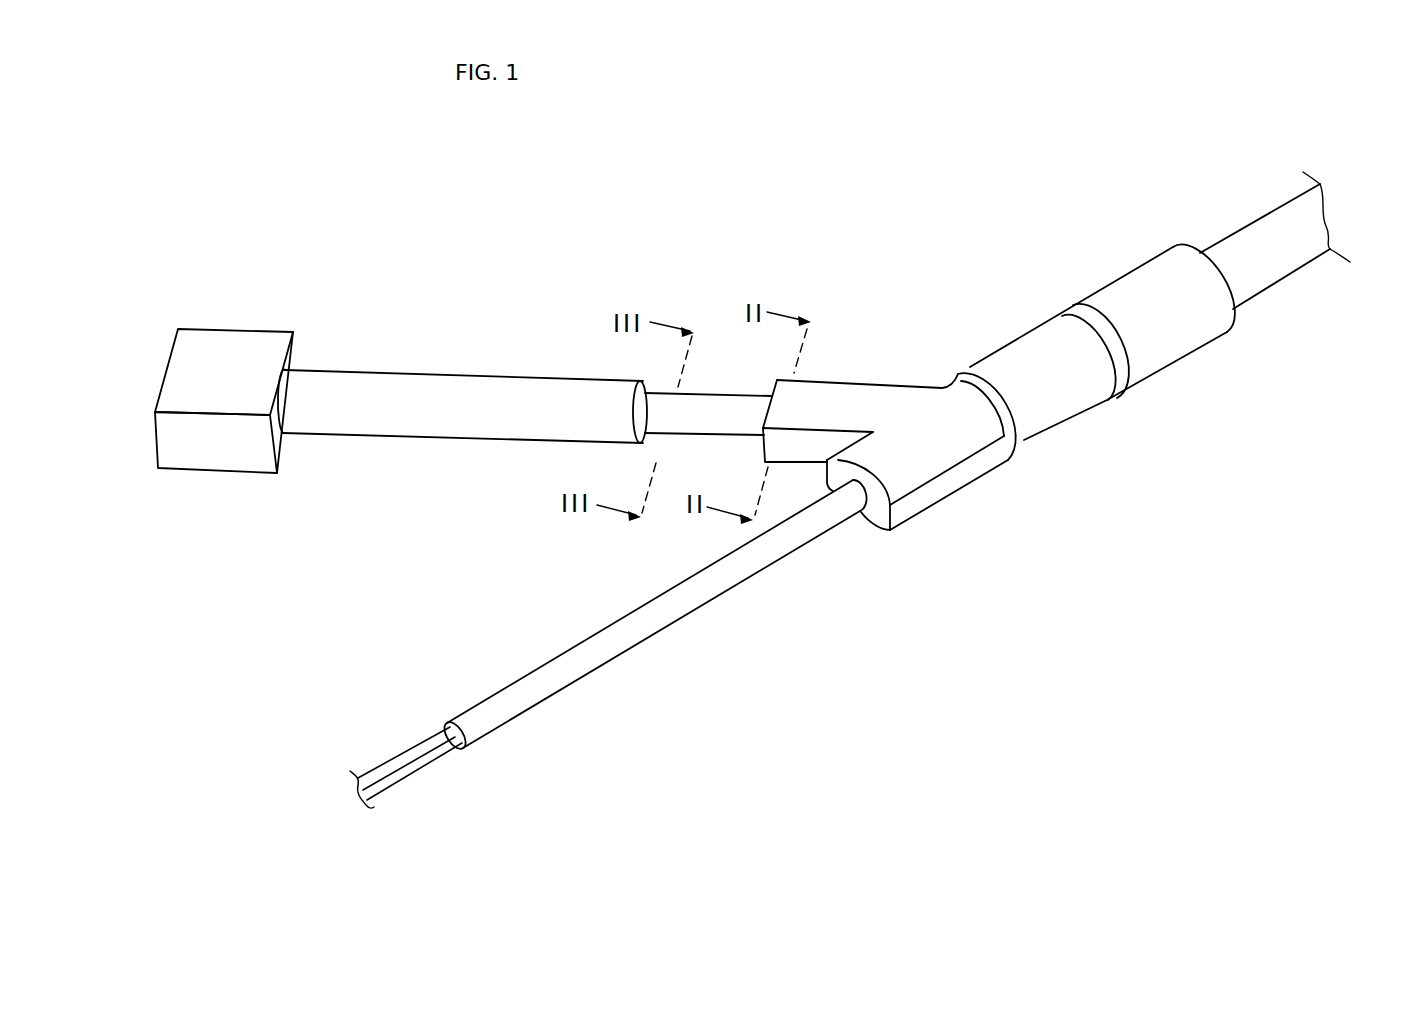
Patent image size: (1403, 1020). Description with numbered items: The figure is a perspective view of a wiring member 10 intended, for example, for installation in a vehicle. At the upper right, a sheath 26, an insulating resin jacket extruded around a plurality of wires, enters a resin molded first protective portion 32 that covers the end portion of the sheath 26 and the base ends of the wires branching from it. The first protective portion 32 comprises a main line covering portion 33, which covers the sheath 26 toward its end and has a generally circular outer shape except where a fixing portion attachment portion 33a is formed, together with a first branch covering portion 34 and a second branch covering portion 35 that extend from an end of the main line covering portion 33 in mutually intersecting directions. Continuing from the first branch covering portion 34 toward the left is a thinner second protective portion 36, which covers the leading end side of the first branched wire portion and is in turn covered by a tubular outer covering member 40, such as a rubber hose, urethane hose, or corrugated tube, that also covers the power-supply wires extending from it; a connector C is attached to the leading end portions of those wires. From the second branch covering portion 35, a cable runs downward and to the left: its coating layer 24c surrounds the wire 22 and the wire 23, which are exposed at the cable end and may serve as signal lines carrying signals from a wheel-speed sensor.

The wiring member 10 is at (925, 254).
The connector C is at (242, 350).
The outer covering member 40 is at (432, 422).
The second protective portion 36 is at (718, 412).
The first protective portion 32 is at (999, 408).
The main line covering portion 33 is at (1102, 374).
The fixing portion attachment portion 33a is at (1035, 357).
The first branch covering portion 34 is at (835, 437).
The second branch covering portion 35 is at (920, 451).
The sheath 26 is at (1236, 245).
The coating layer 24c is at (764, 556).
The wire 22 is at (402, 758).
The wire 23 is at (417, 765).